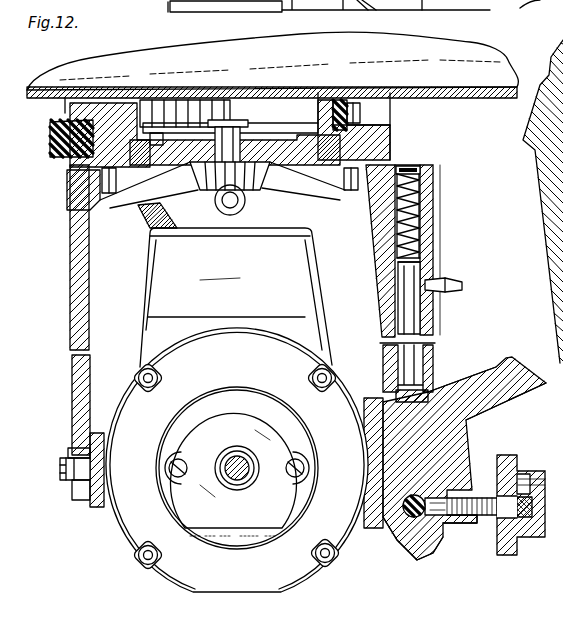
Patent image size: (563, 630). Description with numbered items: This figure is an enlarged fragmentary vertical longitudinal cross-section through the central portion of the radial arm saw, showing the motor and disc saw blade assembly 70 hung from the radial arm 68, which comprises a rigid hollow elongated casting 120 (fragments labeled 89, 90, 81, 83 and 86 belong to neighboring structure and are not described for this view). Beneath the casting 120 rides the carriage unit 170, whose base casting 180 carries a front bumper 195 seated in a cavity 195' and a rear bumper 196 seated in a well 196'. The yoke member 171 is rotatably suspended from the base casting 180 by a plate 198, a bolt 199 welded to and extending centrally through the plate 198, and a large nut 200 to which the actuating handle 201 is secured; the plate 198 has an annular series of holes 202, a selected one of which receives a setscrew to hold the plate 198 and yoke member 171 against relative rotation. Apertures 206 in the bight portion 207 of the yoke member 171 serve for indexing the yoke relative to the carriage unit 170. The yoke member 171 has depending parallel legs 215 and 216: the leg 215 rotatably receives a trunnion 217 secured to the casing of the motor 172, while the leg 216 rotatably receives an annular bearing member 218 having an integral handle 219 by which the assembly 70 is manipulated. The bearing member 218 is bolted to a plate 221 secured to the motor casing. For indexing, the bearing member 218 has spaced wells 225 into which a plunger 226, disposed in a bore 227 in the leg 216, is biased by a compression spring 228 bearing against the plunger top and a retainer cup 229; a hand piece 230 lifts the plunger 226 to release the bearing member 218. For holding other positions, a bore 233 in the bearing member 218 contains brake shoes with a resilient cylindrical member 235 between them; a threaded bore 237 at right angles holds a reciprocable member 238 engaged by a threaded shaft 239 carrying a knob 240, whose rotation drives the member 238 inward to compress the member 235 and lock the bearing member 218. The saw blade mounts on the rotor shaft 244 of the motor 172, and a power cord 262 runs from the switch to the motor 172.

The radial arm 68 is at (458, 70).
The casting 120 is at (462, 89).
The carriage unit 170 is at (394, 124).
The front bumper 195 is at (349, 84).
The cavity 195' is at (393, 134).
The rear bumper 196 is at (84, 132).
The well 196' is at (54, 129).
The base casting 180 is at (72, 166).
The apertures 206 is at (105, 190).
The plate 198 is at (270, 125).
The bolt 199 is at (235, 120).
The holes 202 is at (172, 125).
The bight portion 207 is at (300, 165).
The large nut 200 is at (240, 186).
The actuating handle 201 is at (230, 208).
The retainer cup 229 is at (404, 168).
The compression spring 228 is at (424, 207).
The motor and disc saw blade assembly 70 is at (442, 246).
The hand piece 230 is at (445, 280).
The bore 227 is at (400, 303).
The leg 216 is at (394, 343).
The plunger 226 is at (410, 362).
The handle 219 is at (502, 362).
The wells 225 is at (470, 405).
The bearing member 218 is at (440, 441).
The plate 221 is at (376, 527).
The bore 233 is at (410, 555).
The cylindrical member 235 is at (400, 548).
The threaded bore 237 is at (449, 526).
The reciprocable member 238 is at (436, 556).
The threaded shaft 239 is at (492, 522).
The knob 240 is at (528, 540).
The yoke member 171 is at (70, 244).
The leg 215 is at (72, 358).
The trunnion 217 is at (62, 478).
The power cord 262 is at (150, 226).
The motor 172 is at (130, 546).
The rotor shaft 244 is at (246, 474).
The element 89 is at (144, 7).
The element 90 is at (213, 9).
The element 81 is at (310, 0).
The element 83 is at (372, 0).
The element 86 is at (481, 13).